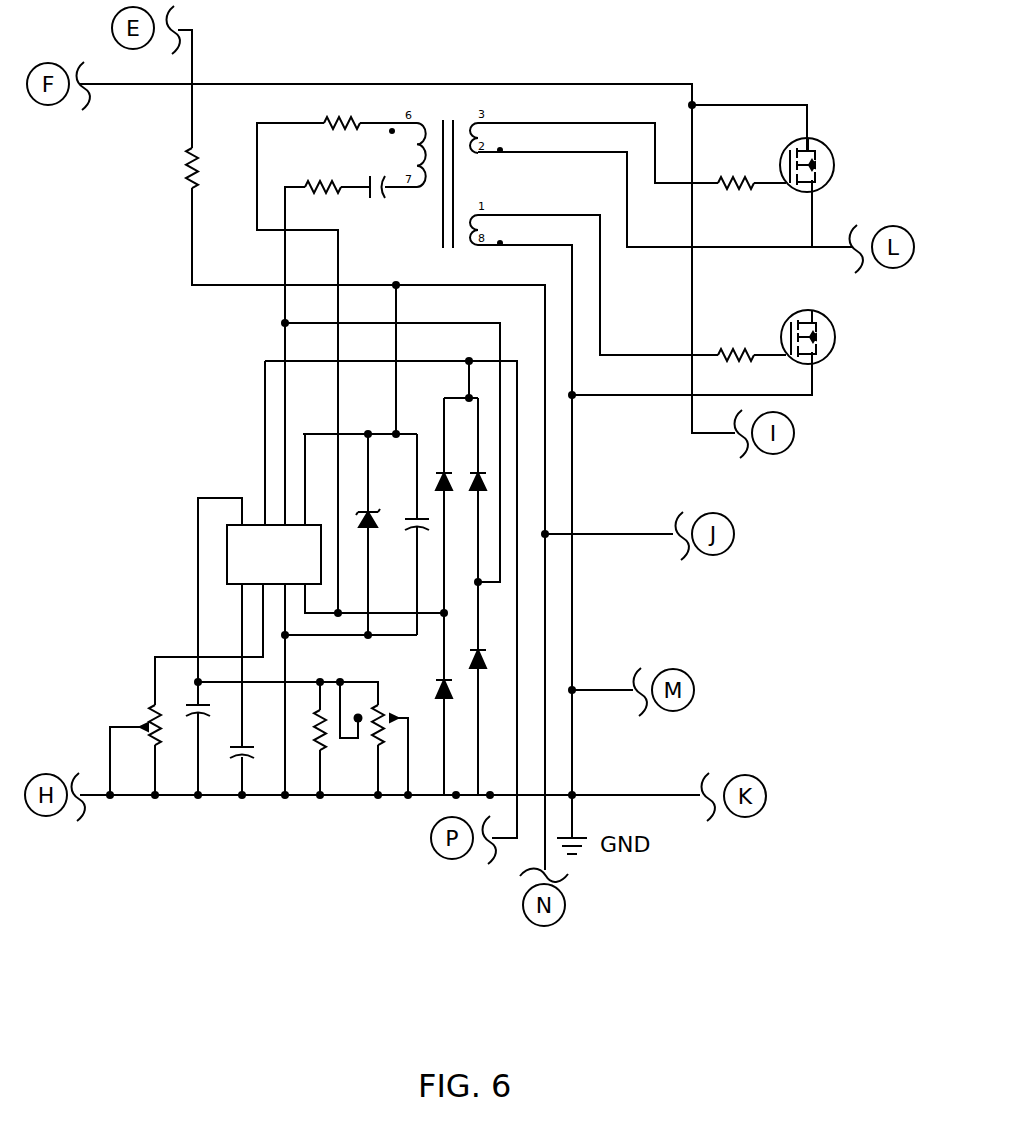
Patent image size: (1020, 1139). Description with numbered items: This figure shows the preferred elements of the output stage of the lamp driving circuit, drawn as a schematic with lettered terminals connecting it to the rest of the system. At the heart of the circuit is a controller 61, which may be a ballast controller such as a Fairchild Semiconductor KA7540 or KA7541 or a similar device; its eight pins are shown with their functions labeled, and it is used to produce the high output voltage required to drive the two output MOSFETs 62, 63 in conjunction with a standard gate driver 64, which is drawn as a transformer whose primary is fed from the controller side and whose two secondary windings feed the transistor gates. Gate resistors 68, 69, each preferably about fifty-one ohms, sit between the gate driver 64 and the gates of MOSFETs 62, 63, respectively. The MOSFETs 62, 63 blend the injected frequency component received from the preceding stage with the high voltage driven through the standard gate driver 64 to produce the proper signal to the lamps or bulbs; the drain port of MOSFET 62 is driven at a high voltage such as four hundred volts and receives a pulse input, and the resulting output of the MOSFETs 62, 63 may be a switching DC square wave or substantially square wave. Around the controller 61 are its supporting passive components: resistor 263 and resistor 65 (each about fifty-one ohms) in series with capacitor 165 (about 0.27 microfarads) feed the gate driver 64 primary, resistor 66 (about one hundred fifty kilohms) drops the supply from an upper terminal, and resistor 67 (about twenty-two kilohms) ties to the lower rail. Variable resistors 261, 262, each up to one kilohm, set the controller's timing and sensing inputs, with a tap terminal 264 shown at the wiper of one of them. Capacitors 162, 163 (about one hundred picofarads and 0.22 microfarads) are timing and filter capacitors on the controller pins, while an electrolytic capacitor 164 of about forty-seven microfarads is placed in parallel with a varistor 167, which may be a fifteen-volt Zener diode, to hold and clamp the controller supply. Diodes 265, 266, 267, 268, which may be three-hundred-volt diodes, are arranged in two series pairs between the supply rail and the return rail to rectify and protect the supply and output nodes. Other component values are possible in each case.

The controller 61 is at (222, 540).
The output MOSFET 62 is at (825, 147).
The output MOSFET 63 is at (826, 354).
The standard gate driver 64 is at (454, 114).
The resistor 65 is at (334, 112).
The resistor 66 is at (181, 166).
The resistor 67 is at (308, 740).
The resistor 68 is at (741, 178).
The resistor 69 is at (741, 349).
The capacitor 162 is at (192, 700).
The capacitor 163 is at (231, 763).
The capacitor 164 is at (405, 547).
The capacitor 165 is at (379, 204).
The varistor 167 is at (373, 505).
The variable resistor 261 is at (148, 706).
The variable resistor 262 is at (390, 708).
The resistor 263 is at (322, 177).
The terminal 264 is at (357, 742).
The diode 265 is at (441, 468).
The diode 266 is at (492, 481).
The diode 267 is at (493, 658).
The diode 268 is at (437, 676).